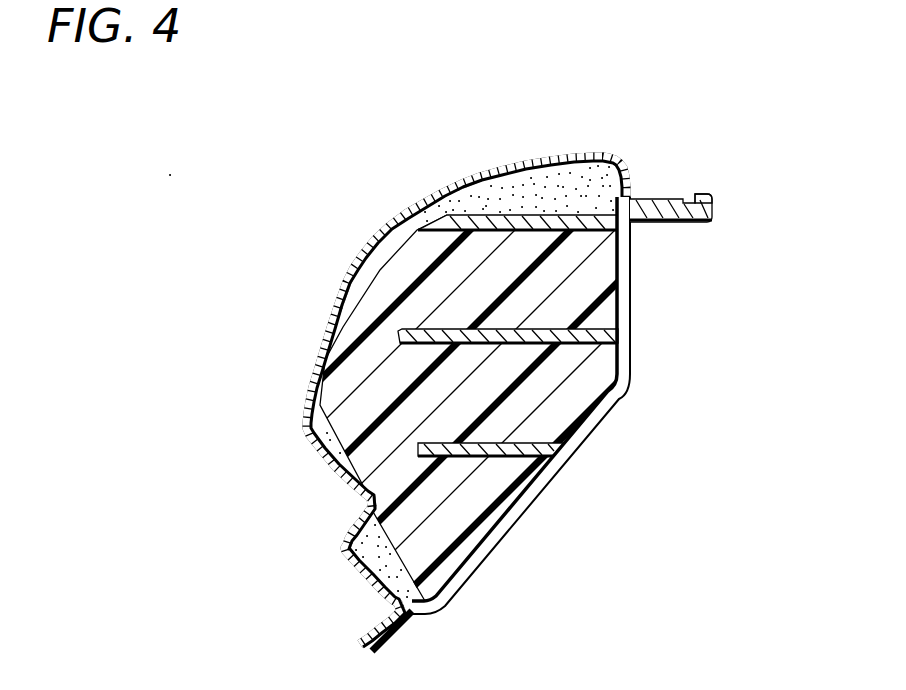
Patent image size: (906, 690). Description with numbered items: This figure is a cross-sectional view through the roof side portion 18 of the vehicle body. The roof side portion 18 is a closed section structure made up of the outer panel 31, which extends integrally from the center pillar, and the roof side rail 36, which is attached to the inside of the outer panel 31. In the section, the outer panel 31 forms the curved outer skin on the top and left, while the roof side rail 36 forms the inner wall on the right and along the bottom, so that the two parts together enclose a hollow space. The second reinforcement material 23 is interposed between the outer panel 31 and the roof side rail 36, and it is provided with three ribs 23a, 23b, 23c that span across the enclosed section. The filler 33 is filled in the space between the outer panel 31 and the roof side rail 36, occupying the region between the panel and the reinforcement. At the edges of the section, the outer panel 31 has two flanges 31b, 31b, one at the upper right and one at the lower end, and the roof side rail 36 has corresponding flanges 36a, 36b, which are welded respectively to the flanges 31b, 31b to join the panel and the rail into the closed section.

The roof side portion 18 is at (322, 258).
The second reinforcement material 23 is at (407, 210).
The rib 23a is at (540, 215).
The rib 23b is at (557, 330).
The rib 23c is at (540, 443).
The outer panel 31 is at (313, 360).
The flanges of the outer panel 31b is at (667, 198).
The filler 33 is at (383, 542).
The roof side rail 36 is at (633, 352).
The flange of the roof side rail 36a is at (683, 223).
The flange of the roof side rail 36b is at (387, 637).